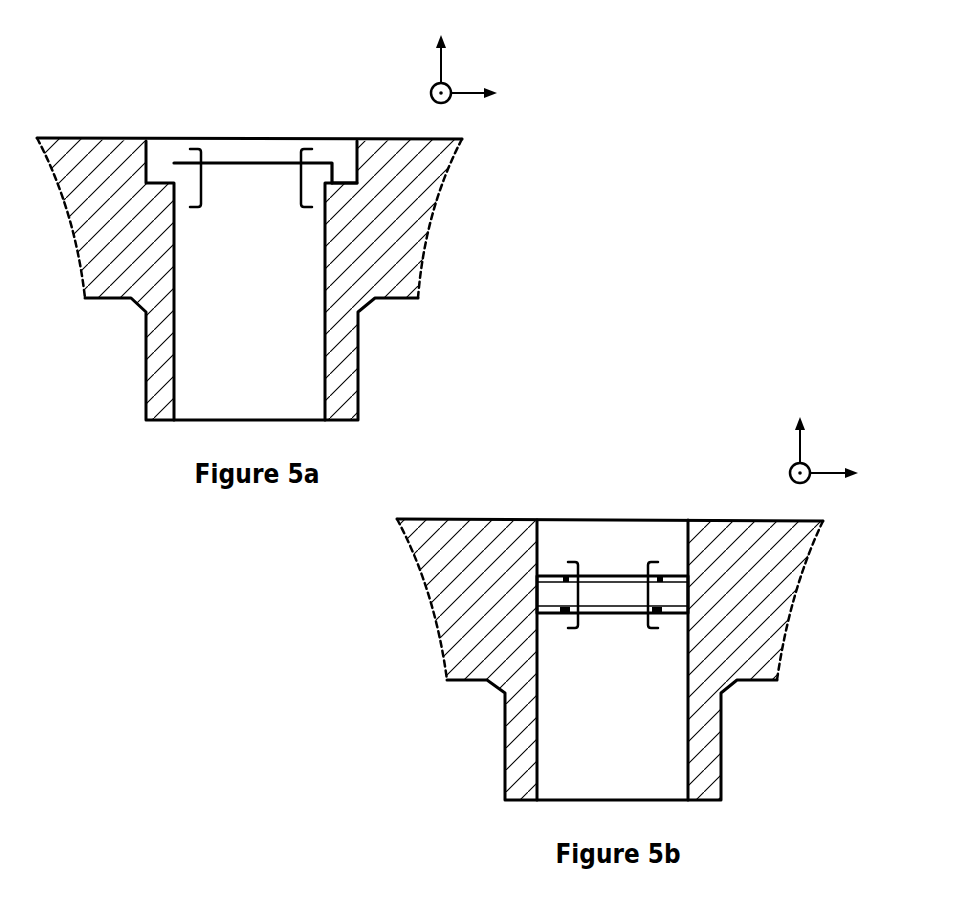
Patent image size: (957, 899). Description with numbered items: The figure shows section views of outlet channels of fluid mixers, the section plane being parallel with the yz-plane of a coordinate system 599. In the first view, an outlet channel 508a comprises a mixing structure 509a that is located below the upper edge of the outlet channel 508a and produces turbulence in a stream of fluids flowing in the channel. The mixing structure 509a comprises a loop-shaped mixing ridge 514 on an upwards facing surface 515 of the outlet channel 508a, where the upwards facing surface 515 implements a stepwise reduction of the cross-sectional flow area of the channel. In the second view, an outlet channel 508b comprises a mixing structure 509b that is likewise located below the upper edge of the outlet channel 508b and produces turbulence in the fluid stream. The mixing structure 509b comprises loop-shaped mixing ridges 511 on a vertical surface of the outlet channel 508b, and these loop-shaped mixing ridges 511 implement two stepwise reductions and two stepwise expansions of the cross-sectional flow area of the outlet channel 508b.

In FIG. 5A, the outlet channel 508a is at (235, 348).
In FIG. 5B, the outlet channel 508b is at (595, 728).
In FIG. 5A, the mixing structure 509a is at (203, 177).
In FIG. 5B, the mixing structure 509b is at (578, 596).
In FIG. 5B, the loop-shaped mixing ridges 511 is at (672, 576).
In FIG. 5A, the loop-shaped mixing ridge 514 is at (331, 166).
In FIG. 5A, the upwards facing surface 515 is at (346, 174).
In FIG. 5A, the coordinate system 599 is at (462, 71).
In FIG. 5B, the coordinate system 599 is at (822, 450).